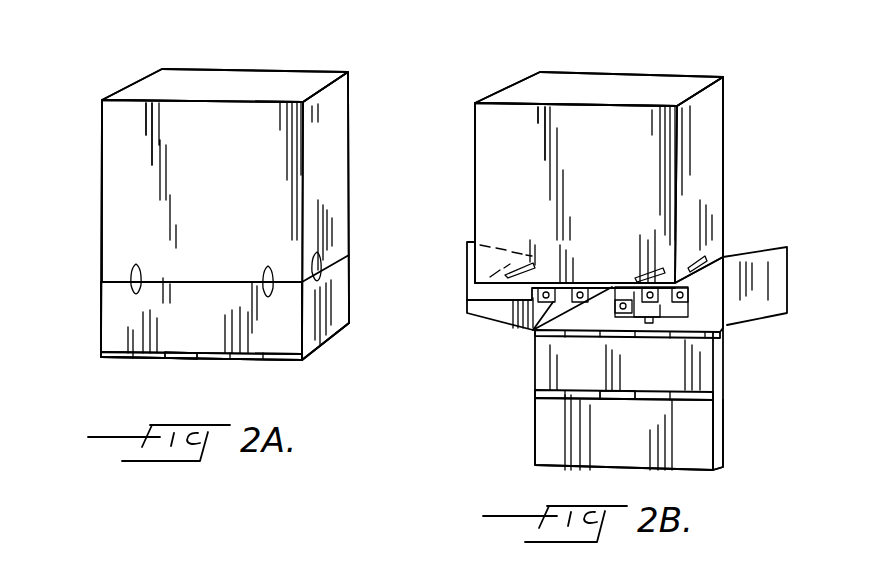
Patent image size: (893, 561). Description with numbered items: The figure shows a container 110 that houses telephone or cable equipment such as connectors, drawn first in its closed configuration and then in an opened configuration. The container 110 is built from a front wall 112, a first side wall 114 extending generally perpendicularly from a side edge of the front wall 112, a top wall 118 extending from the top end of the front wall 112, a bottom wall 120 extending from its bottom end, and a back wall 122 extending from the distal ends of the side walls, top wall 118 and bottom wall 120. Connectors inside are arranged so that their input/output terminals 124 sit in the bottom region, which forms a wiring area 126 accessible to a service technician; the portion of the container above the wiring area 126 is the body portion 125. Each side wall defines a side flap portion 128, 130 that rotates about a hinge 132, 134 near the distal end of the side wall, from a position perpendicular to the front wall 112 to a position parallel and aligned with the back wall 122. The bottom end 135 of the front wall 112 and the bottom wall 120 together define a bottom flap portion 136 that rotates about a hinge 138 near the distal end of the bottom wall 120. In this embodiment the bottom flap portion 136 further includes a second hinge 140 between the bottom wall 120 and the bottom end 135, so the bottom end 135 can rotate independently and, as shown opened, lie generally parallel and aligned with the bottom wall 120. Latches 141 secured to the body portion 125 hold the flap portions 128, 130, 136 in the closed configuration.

In FIG. 2A, the container 110 is at (147, 60).
In FIG. 2B, the container 110 is at (695, 60).
In FIG. 2A, the front wall 112 is at (108, 164).
In FIG. 2B, the front wall 112 is at (487, 125).
In FIG. 2A, the first side wall 114 is at (347, 100).
In FIG. 2B, the first side wall 114 is at (718, 108).
In FIG. 2A, the top wall 118 is at (238, 78).
In FIG. 2B, the top wall 118 is at (574, 80).
In FIG. 2B, the bottom wall 120 is at (708, 372).
In FIG. 2B, the back wall 122 is at (710, 305).
In FIG. 2B, the input/output terminals 124 is at (533, 330).
In FIG. 2A, the body portion 125 is at (120, 222).
In FIG. 2B, the body portion 125 is at (499, 157).
In FIG. 2B, the wiring area 126 is at (685, 318).
In FIG. 2A, the side flap portion 128 is at (328, 328).
In FIG. 2B, the side flap portion 128 is at (777, 255).
In FIG. 2B, the side flap portion 130 is at (467, 287).
In FIG. 2A, the hinge 132 is at (322, 262).
In FIG. 2B, the hinge 132 is at (740, 251).
In FIG. 2B, the hinge 134 is at (520, 311).
In FIG. 2A, the bottom end of the front wall 135 is at (108, 319).
In FIG. 2B, the bottom end of the front wall 135 is at (710, 440).
In FIG. 2A, the bottom flap portion 136 is at (128, 335).
In FIG. 2B, the bottom flap portion 136 is at (540, 412).
In FIG. 2B, the hinge 138 is at (587, 335).
In FIG. 2A, the second hinge 140 is at (185, 362).
In FIG. 2B, the second hinge 140 is at (612, 399).
In FIG. 2A, the latches 141 is at (302, 265).